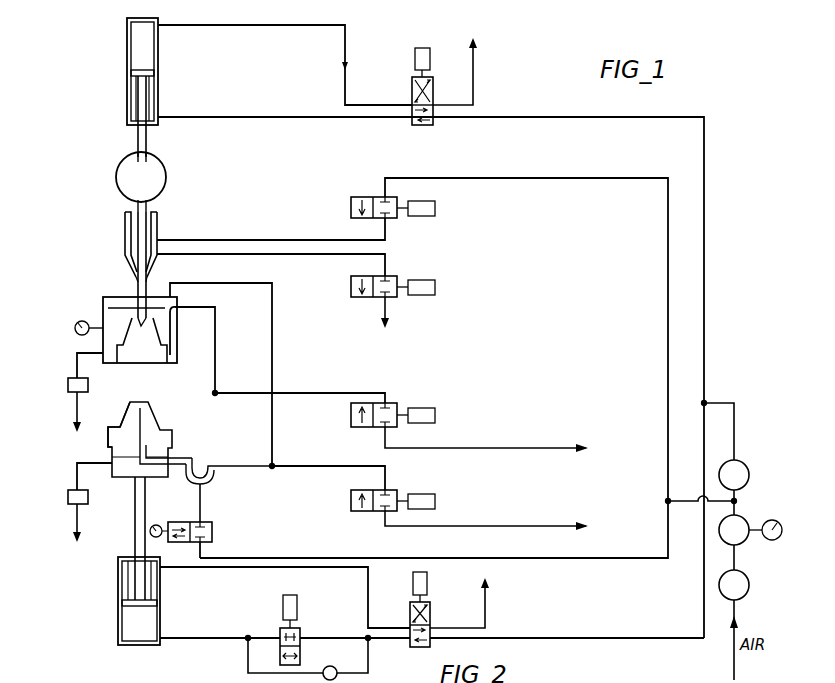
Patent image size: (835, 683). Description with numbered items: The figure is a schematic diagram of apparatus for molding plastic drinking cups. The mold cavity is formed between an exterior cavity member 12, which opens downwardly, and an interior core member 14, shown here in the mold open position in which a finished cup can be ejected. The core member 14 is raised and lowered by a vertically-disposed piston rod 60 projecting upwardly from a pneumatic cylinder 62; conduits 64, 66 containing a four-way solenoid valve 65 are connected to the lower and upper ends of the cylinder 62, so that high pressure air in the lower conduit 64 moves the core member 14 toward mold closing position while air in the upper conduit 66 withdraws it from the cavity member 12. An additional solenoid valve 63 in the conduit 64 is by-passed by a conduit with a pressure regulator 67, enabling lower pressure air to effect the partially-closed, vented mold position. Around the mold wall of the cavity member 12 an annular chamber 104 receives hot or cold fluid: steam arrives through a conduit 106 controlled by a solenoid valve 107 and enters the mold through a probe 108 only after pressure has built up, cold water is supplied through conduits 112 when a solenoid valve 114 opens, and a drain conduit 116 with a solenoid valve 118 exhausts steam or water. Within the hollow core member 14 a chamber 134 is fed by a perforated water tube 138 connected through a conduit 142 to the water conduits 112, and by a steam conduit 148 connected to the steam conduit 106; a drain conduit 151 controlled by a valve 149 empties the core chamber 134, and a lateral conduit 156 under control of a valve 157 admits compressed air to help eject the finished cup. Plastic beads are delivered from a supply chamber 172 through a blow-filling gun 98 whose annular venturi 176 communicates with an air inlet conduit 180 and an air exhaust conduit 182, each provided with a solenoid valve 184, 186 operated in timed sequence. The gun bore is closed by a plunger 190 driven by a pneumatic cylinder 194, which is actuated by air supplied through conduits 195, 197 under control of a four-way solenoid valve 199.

The cavity member 12 is at (98, 305).
The core member 14 is at (143, 428).
The piston rod 60 is at (135, 520).
The pneumatic cylinder 62 is at (118, 585).
The solenoid valve 63 is at (300, 630).
The conduit 64 is at (182, 638).
The four-way solenoid valve 65 is at (430, 610).
The conduit 66 is at (240, 567).
The pressure regulator 67 is at (336, 669).
The blow-filling gun 98 is at (118, 221).
The annular chamber 104 is at (103, 343).
The conduit 106 is at (196, 313).
The solenoid valve 107 is at (390, 403).
The probe 108 is at (143, 324).
The conduits 112 is at (272, 308).
The solenoid valve 114 is at (351, 504).
The drain conduit 116 is at (95, 373).
The solenoid valve 118 is at (68, 383).
The chamber 134 is at (128, 422).
The tube 138 is at (142, 416).
The conduit 142 is at (210, 474).
The conduit 148 is at (210, 453).
The valve 149 is at (72, 490).
The drain conduit 151 is at (92, 463).
The lateral conduit 156 is at (200, 458).
The valve 157 is at (212, 528).
The supply chamber 172 is at (164, 172).
The annular venturi 176 is at (136, 276).
The air inlet conduit 180 is at (237, 240).
The air exhaust conduit 182 is at (237, 254).
The solenoid valve 184 is at (362, 197).
The solenoid valve 186 is at (351, 284).
The plunger 190 is at (146, 140).
The pneumatic cylinder 194 is at (158, 50).
The conduit 195 is at (238, 25).
The conduit 197 is at (226, 117).
The four-way solenoid valve 199 is at (412, 100).